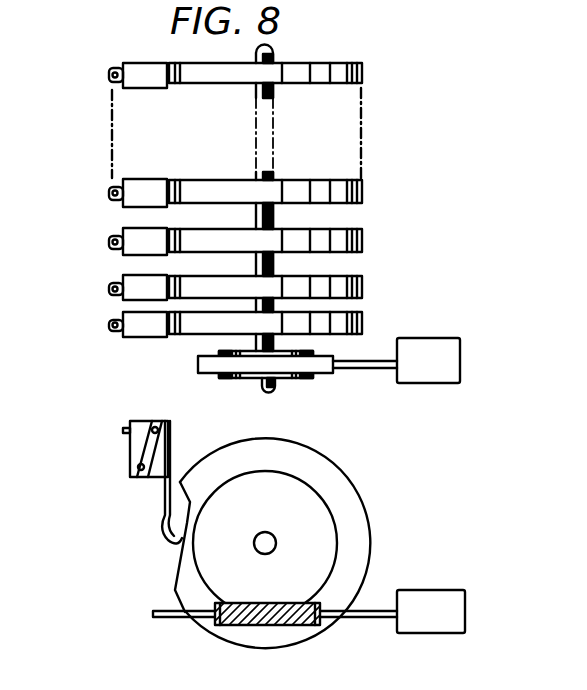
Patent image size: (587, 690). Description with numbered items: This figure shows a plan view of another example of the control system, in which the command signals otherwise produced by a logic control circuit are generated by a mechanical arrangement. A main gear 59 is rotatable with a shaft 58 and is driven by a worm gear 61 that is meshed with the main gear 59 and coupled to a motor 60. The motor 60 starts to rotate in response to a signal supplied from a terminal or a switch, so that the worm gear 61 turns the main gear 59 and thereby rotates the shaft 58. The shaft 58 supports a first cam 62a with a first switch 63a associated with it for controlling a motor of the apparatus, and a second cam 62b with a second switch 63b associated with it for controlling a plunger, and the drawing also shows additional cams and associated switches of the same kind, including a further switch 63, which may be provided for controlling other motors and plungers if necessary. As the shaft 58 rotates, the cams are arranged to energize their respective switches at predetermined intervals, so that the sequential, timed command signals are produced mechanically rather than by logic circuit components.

The shaft 58 is at (267, 393).
The main gear 59 is at (250, 378).
The motor 60 is at (455, 360).
The worm gear 61 is at (208, 370).
The first cam 62a is at (340, 316).
The second cam 62b is at (340, 277).
The switch 63 is at (133, 448).
The first switch 63a is at (121, 327).
The second switch 63b is at (127, 296).